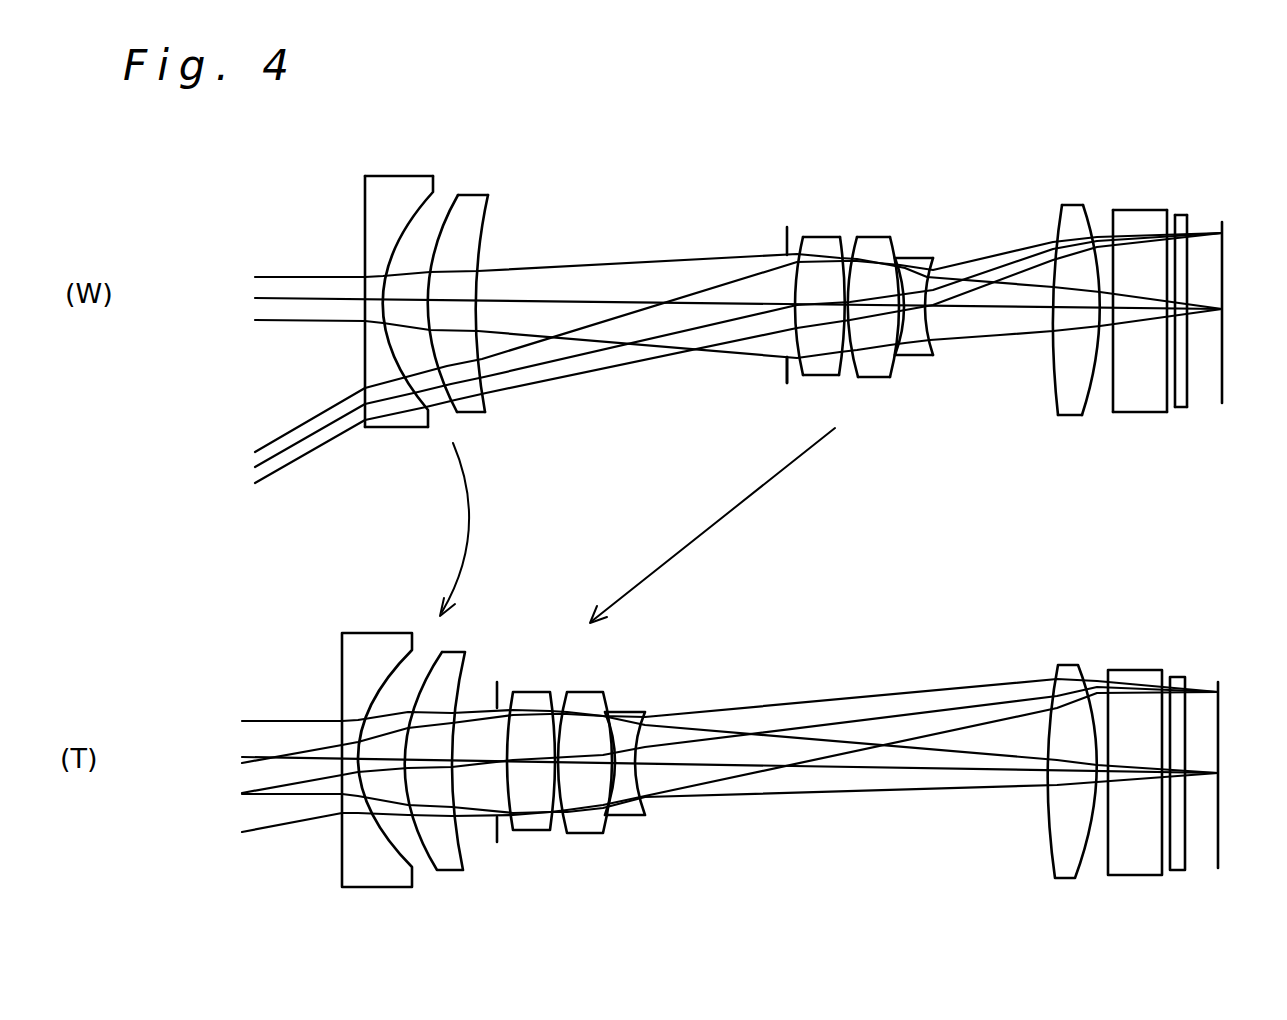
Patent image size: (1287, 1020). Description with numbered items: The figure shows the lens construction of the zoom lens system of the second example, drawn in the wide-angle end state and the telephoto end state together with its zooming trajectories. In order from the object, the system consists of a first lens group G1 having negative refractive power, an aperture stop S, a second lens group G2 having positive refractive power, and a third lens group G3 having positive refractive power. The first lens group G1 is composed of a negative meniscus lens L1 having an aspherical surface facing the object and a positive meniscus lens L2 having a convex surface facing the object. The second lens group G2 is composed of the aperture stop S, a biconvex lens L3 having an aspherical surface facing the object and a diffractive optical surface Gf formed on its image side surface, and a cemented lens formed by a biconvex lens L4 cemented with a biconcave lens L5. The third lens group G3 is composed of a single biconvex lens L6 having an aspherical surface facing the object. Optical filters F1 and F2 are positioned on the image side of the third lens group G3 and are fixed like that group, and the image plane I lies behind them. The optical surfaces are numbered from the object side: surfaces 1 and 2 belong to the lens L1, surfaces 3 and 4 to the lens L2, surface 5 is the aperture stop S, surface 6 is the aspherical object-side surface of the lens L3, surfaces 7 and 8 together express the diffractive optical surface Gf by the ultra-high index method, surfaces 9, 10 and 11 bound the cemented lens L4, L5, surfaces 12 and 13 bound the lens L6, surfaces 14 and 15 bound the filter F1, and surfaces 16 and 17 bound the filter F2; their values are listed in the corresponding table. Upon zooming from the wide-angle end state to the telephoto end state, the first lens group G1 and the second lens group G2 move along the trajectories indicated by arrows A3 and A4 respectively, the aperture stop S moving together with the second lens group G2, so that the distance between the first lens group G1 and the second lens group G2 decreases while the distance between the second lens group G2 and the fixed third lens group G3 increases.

The surface number 1 is at (360, 412).
The surface number 2 is at (422, 400).
The surface number 3 is at (447, 400).
The surface number 4 is at (487, 400).
The surface number 5 is at (786, 383).
The surface number 6 is at (802, 373).
The surface number 7 is at (857, 378).
The surface number 8 is at (853, 307).
The surface number 9 is at (841, 376).
The surface number 10 is at (893, 368).
The surface number 11 is at (935, 356).
The surface number 12 is at (1058, 407).
The surface number 13 is at (1087, 400).
The surface number 14 is at (1113, 402).
The surface number 15 is at (1163, 402).
The surface number 16 is at (1178, 403).
The surface number 17 is at (1190, 398).
The aperture stop S is at (787, 226).
The image plane I is at (1222, 224).
The first lens group G1 is at (482, 134).
The second lens group G2 is at (953, 138).
The third lens group G3 is at (1095, 141).
The diffractive optical surface Gf is at (885, 455).
The negative meniscus lens L1 is at (396, 187).
The positive meniscus lens L2 is at (470, 200).
The biconvex lens L3 is at (823, 237).
The biconvex lens L4 is at (877, 240).
The biconcave lens L5 is at (918, 258).
The biconvex lens L6 is at (1072, 207).
The optical filter F1 is at (1140, 215).
The optical filter F2 is at (1182, 217).
The arrow A3 is at (470, 532).
The arrow A4 is at (720, 522).